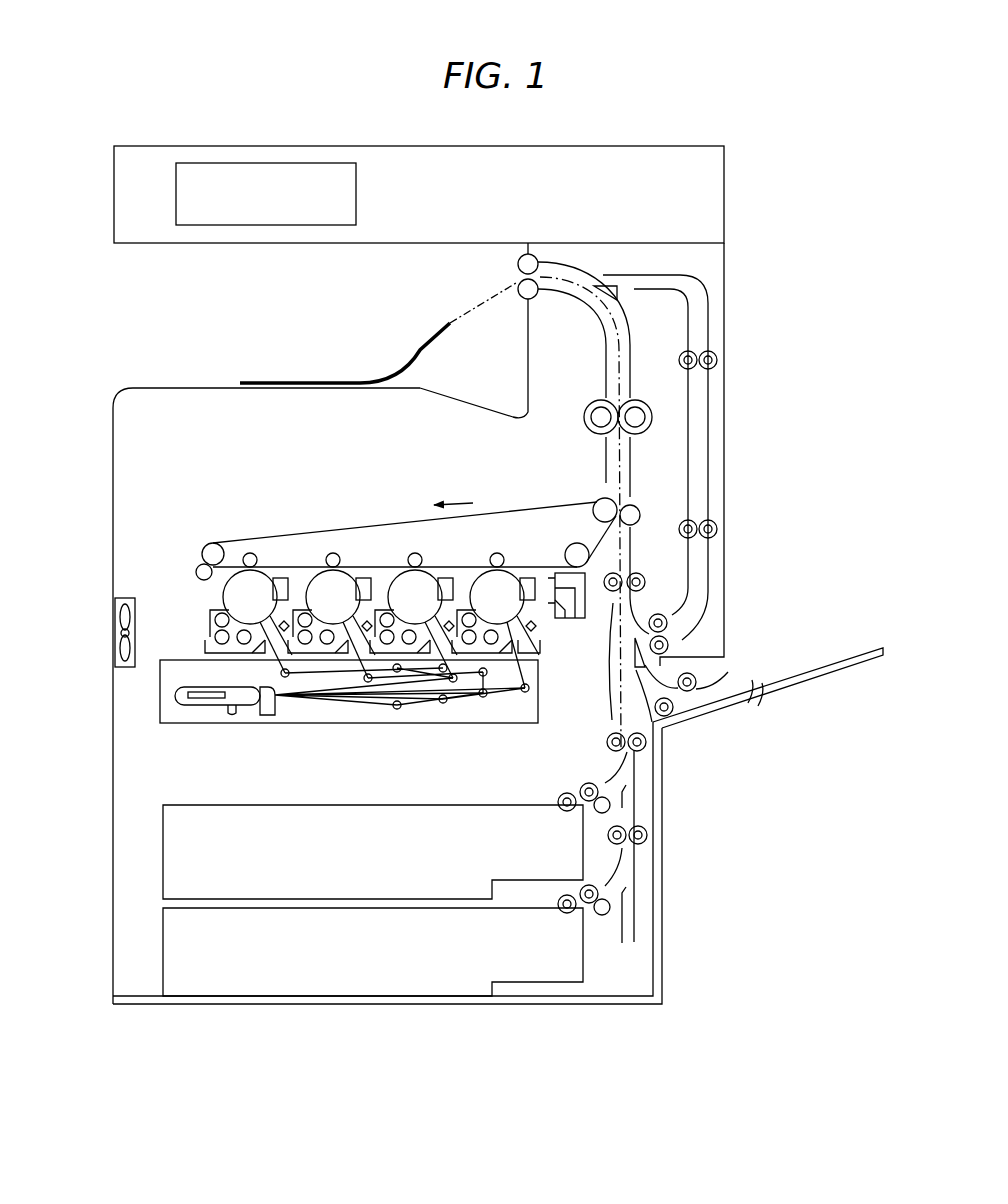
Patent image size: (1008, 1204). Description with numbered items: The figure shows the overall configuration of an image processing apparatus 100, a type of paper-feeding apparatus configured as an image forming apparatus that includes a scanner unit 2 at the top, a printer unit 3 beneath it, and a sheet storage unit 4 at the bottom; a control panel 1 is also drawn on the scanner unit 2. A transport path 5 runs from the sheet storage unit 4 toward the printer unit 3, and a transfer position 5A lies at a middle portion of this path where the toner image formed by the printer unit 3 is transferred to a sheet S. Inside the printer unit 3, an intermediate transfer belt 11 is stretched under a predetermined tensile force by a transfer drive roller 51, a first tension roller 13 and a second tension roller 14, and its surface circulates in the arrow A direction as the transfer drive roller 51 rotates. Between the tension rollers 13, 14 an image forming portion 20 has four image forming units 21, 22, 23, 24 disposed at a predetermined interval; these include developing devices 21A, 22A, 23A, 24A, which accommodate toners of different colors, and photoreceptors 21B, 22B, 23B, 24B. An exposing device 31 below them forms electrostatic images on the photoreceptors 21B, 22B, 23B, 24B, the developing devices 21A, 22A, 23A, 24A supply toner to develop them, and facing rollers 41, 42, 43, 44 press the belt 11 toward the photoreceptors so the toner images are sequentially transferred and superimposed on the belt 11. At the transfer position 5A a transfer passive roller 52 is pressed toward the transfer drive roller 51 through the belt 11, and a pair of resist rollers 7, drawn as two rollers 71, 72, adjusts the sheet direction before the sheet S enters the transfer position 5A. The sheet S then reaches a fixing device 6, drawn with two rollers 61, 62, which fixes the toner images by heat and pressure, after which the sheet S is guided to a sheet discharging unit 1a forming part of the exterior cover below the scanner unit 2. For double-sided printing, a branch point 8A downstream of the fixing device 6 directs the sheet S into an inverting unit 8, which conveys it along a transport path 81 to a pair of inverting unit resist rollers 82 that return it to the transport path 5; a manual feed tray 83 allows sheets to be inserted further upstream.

The image processing apparatus 100 is at (762, 208).
The control panel 1 is at (220, 163).
The sheet discharging unit 1a is at (310, 343).
The scanner unit 2 is at (651, 160).
The printer unit 3 is at (205, 404).
The sheet storage unit 4 is at (226, 803).
The transport path 5 is at (632, 712).
The transfer position 5A is at (637, 503).
The fixing device 6 is at (625, 386).
The pressure roller 61 is at (647, 405).
The fixing roller 62 is at (588, 402).
The pair of resist rollers 7 is at (663, 585).
The registration roller 71 is at (612, 593).
The registration roller 72 is at (638, 572).
The inverting unit 8 is at (704, 281).
The branch point 8A is at (599, 274).
The transport path 81 is at (708, 418).
The pair of inverting unit resist rollers 82 is at (672, 634).
The manual feed tray 83 is at (800, 690).
The intermediate transfer belt 11 is at (372, 523).
The first tension roller 13 is at (203, 555).
The second tension roller 14 is at (575, 550).
The image forming portion 20 is at (156, 593).
The image forming unit 21 is at (217, 620).
The developing device 21A is at (206, 641).
The photoreceptor 21B is at (228, 596).
The image forming unit 22 is at (316, 621).
The developing device 22A is at (327, 662).
The photoreceptor 22B is at (320, 583).
The image forming unit 23 is at (398, 621).
The developing device 23A is at (409, 662).
The photoreceptor 23B is at (400, 583).
The image forming unit 24 is at (500, 621).
The developing device 24A is at (491, 662).
The photoreceptor 24B is at (483, 583).
The exposing device 31 is at (386, 726).
The facing roller 41 is at (250, 553).
The facing roller 42 is at (331, 552).
The facing roller 43 is at (413, 553).
The facing roller 44 is at (500, 553).
The transfer drive roller 51 is at (602, 500).
The transfer passive roller 52 is at (638, 510).
The arrow A direction A is at (453, 481).
The sheet S is at (420, 345).